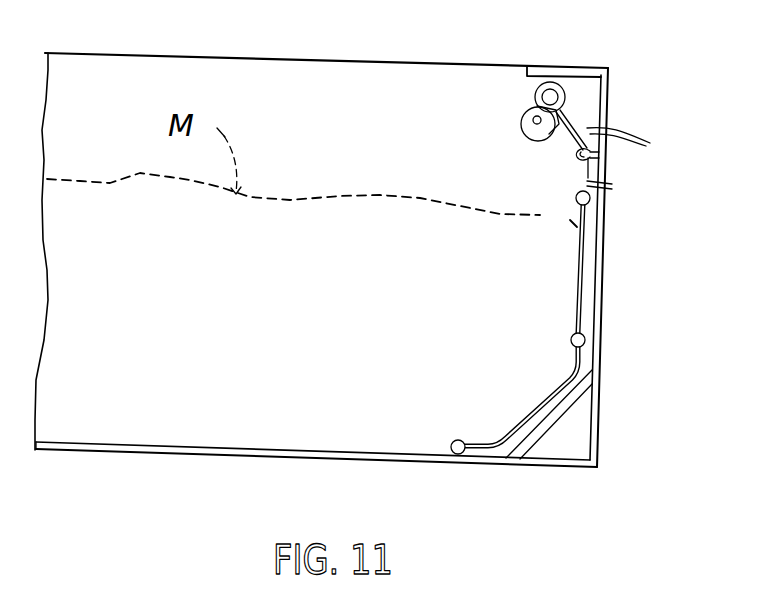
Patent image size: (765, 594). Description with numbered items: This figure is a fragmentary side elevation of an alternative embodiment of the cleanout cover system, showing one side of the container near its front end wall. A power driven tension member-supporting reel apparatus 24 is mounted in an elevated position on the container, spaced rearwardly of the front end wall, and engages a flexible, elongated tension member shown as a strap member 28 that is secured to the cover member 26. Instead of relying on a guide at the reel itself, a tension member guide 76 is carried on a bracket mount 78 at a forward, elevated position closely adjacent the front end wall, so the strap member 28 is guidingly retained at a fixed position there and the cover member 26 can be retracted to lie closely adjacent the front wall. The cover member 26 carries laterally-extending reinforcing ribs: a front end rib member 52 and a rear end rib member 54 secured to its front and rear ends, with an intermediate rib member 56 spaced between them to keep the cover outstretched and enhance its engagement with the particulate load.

The power driven tension member-supporting reel apparatus 24 is at (518, 119).
The tension member guide 76 is at (576, 153).
The bracket mount 78 is at (598, 163).
The strap member 28 is at (593, 183).
The front end rib member 52 is at (576, 200).
The intermediate rib member 56 is at (570, 340).
The cover member 26 is at (547, 399).
The rear end rib member 54 is at (455, 439).